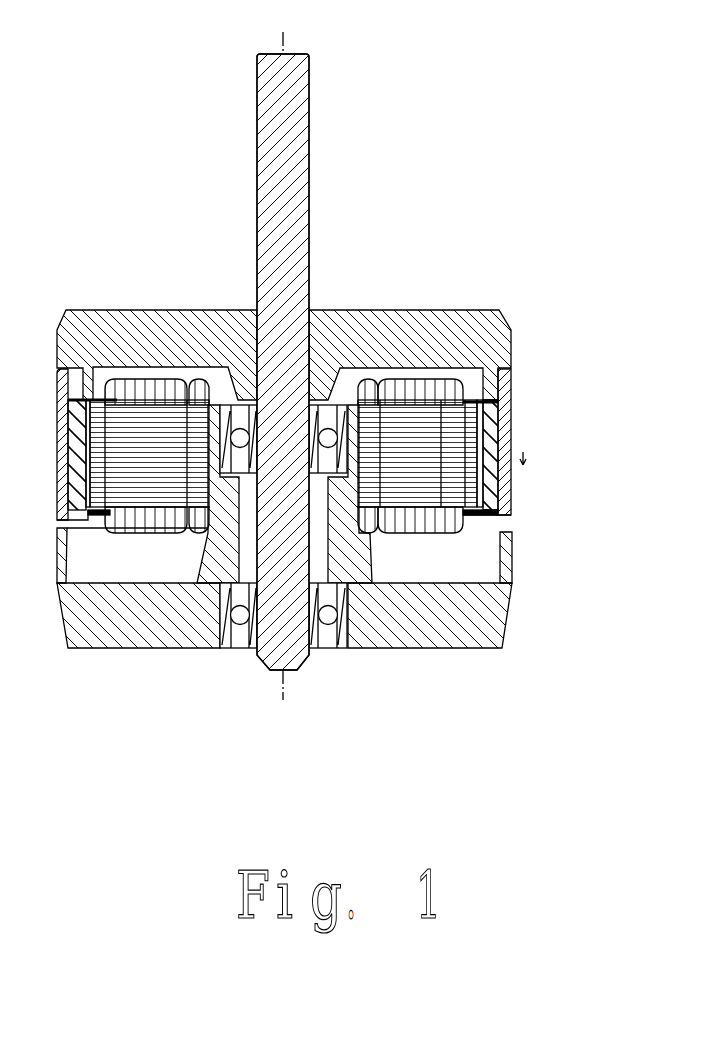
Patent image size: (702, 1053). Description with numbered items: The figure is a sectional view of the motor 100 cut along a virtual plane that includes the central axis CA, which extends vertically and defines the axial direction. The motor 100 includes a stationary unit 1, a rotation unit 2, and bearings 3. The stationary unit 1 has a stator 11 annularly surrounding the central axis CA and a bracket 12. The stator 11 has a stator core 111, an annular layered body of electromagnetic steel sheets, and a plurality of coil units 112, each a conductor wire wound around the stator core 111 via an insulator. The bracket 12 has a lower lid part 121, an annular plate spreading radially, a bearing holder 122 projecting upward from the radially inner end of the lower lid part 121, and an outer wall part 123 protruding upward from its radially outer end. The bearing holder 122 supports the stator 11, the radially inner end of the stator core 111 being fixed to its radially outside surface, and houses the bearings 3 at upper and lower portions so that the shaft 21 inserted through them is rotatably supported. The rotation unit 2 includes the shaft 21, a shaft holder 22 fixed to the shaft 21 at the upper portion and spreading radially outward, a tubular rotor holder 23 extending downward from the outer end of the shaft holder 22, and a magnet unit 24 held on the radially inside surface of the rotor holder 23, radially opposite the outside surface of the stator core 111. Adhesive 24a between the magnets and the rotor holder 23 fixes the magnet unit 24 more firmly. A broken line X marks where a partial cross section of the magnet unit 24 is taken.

The motor 100 is at (157, 252).
The central axis CA is at (283, 351).
The shaft 21 is at (300, 281).
The rotation unit 2 is at (578, 270).
The shaft holder 22 is at (502, 348).
The rotor holder 23 is at (502, 407).
The magnet unit 24 is at (493, 437).
The adhesive 24a is at (497, 492).
The stationary unit 1 is at (636, 523).
The stator 11 is at (585, 508).
The stator core 111 is at (445, 532).
The coil unit 112 is at (413, 528).
The bracket 12 is at (585, 612).
The lower lid part 121 is at (405, 647).
The bearing holder 122 is at (353, 543).
The outer wall part 123 is at (503, 563).
The bearing 3 is at (342, 648).
The broken line X is at (533, 455).